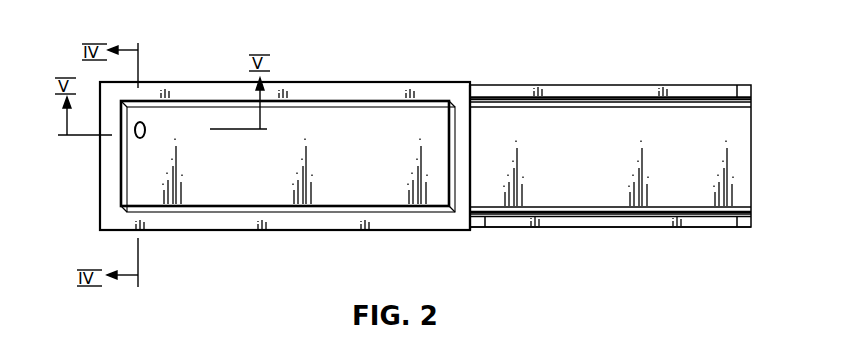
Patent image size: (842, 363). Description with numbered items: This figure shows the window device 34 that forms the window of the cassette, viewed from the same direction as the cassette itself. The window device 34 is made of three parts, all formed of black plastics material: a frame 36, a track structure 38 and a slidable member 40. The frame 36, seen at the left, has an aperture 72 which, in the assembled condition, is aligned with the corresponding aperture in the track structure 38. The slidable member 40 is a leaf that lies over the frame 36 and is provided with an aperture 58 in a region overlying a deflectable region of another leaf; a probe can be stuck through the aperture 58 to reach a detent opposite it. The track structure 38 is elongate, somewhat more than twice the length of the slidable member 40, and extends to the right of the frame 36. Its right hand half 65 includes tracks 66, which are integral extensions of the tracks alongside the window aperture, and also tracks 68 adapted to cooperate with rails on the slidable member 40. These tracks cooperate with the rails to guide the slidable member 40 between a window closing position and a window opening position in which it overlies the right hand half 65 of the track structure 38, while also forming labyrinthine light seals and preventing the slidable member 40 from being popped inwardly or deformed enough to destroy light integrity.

The window device 34 is at (500, 68).
The frame 36 is at (352, 93).
The track structure 38 is at (640, 84).
The slidable member 40 is at (378, 163).
The aperture 58 is at (145, 130).
The right hand half 65 is at (560, 230).
The tracks 66 is at (751, 98).
The tracks 68 is at (703, 88).
The aperture 72 is at (215, 206).